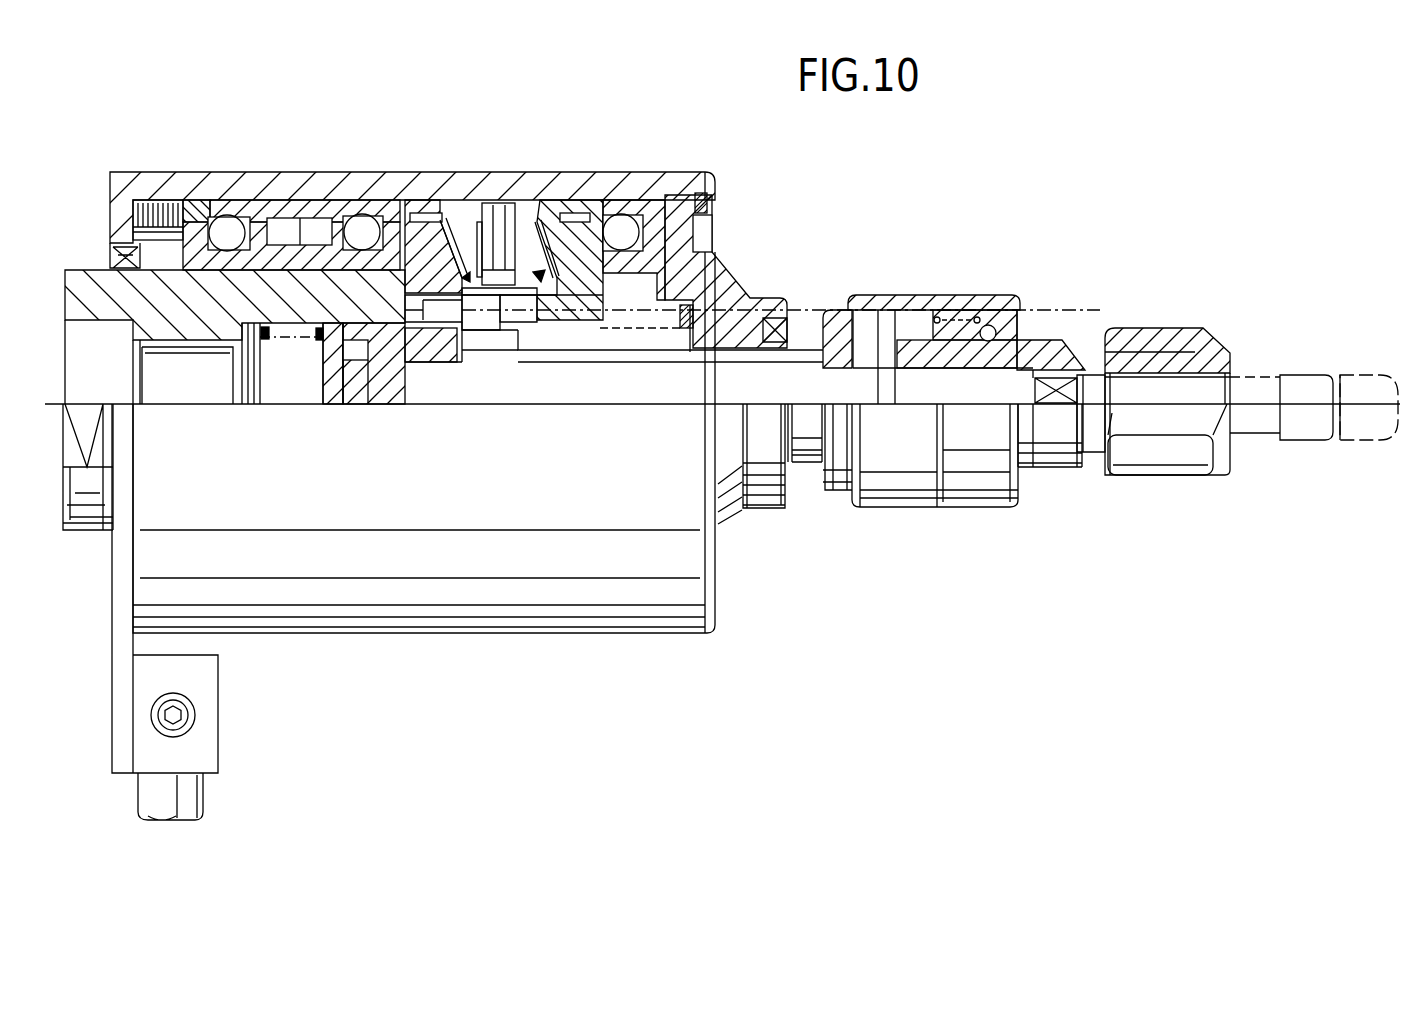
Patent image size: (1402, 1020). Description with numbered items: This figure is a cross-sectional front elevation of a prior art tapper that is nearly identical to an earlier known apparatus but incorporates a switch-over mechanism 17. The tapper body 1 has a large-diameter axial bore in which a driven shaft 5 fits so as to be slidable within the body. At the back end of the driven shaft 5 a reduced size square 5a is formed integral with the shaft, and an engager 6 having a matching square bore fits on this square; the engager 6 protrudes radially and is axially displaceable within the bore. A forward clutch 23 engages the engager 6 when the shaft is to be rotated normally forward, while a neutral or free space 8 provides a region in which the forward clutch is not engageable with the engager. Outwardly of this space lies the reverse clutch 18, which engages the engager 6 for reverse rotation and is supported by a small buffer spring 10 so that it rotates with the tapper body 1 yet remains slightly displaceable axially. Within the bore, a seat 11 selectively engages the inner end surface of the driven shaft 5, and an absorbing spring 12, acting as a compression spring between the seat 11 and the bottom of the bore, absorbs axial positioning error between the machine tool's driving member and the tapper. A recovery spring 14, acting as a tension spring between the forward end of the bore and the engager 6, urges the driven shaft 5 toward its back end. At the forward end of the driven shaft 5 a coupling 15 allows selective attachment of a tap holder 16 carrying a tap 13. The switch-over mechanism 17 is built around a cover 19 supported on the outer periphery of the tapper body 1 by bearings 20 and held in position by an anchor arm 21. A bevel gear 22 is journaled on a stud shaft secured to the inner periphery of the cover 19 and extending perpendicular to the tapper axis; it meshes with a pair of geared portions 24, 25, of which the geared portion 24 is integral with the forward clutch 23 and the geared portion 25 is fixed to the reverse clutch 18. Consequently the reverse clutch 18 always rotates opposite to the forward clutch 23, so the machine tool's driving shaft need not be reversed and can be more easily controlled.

The tapper body 1 is at (293, 292).
The driven shaft 5 is at (690, 378).
The reduced size square 5a is at (428, 406).
The engager 6 is at (440, 315).
The neutral or free space 8 is at (480, 322).
The buffer spring 10 is at (700, 286).
The seat 11 is at (296, 406).
The absorbing spring 12 is at (245, 406).
The tap 13 is at (1295, 375).
The recovery spring 14 is at (680, 343).
The coupling 15 is at (900, 298).
The tap holder 16 is at (1150, 333).
The switch-over mechanism 17 is at (548, 100).
The reverse clutch 18 is at (530, 312).
The cover 19 is at (215, 198).
The bearings 20 is at (258, 200).
The anchor arm 21 is at (205, 789).
The bevel gear 22 is at (458, 205).
The forward clutch 23 is at (413, 318).
The geared portion 24 is at (430, 205).
The geared portion 25 is at (537, 205).